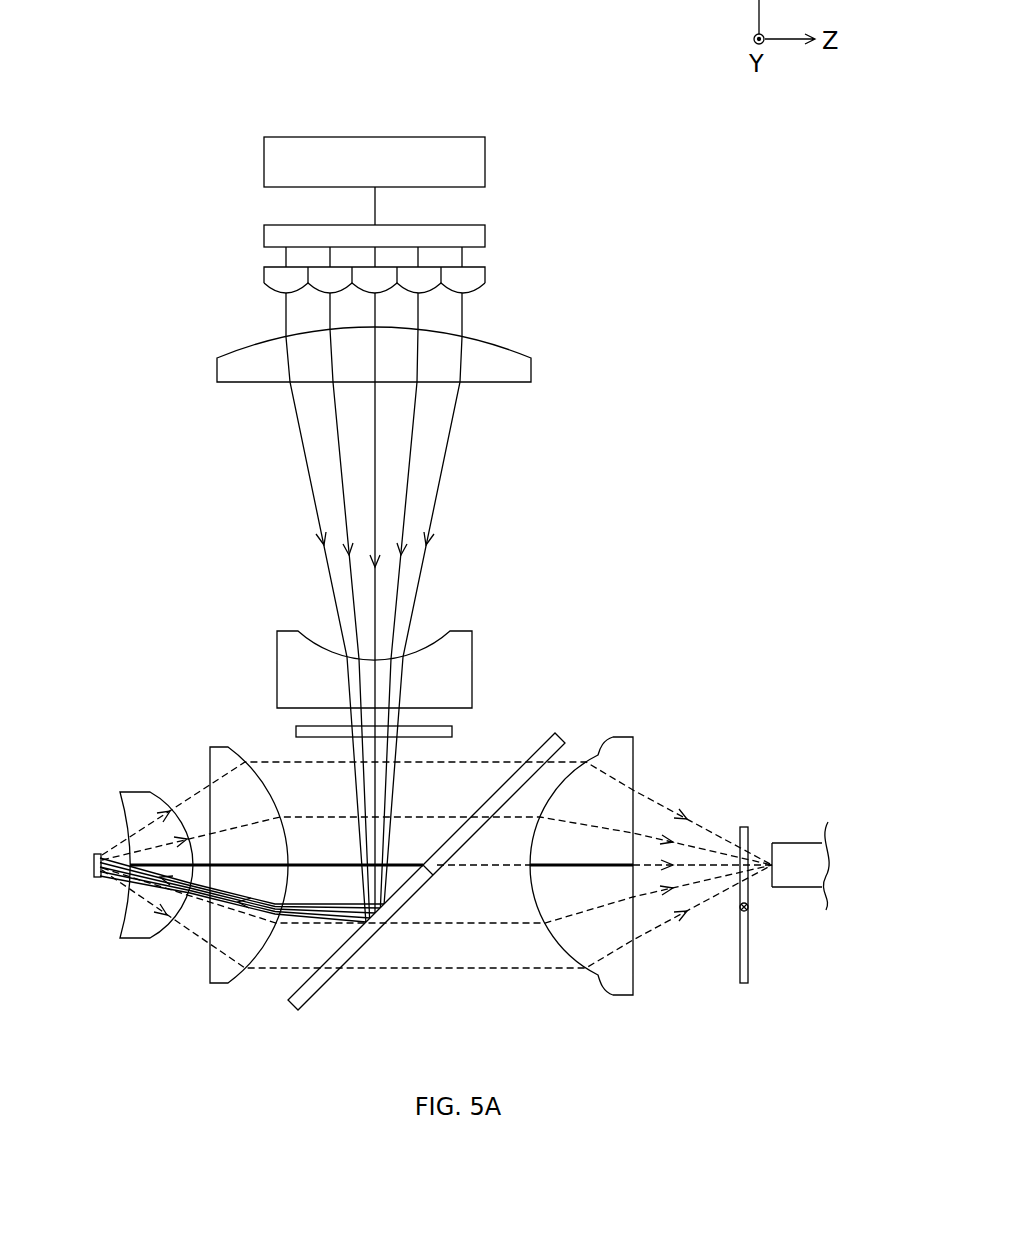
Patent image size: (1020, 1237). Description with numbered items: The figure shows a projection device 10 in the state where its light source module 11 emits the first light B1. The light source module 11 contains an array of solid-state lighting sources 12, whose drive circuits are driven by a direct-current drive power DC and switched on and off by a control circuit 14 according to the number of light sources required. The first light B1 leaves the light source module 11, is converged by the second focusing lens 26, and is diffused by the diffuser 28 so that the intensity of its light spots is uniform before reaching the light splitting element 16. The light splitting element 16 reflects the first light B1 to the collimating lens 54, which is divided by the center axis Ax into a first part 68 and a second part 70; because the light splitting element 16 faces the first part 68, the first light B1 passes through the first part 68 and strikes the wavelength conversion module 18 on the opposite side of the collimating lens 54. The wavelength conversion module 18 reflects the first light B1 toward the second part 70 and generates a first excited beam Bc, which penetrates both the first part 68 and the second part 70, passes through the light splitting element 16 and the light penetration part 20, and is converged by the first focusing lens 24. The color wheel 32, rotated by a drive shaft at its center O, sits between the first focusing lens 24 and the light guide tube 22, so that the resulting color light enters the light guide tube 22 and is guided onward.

The projection device 10 is at (634, 170).
The light source module 11 is at (518, 231).
The solid-state lighting sources 12 is at (264, 278).
The control circuit 14 is at (264, 238).
The direct-current drive power DC is at (264, 161).
The second focusing lens 26 is at (505, 384).
The first light B1 is at (442, 480).
The diffuser 28 is at (452, 731).
The center axis Ax is at (245, 868).
The first excited beam Bc is at (190, 935).
The wavelength conversion module 18 is at (93, 866).
The collimating lens 54 is at (156, 744).
The first part 68 is at (210, 975).
The second part 70 is at (219, 745).
The light penetration part 20 is at (556, 738).
The light splitting element 16 is at (318, 992).
The first focusing lens 24 is at (628, 975).
The light guide tube 22 is at (795, 843).
The center O is at (750, 907).
The color wheel 32 is at (752, 970).